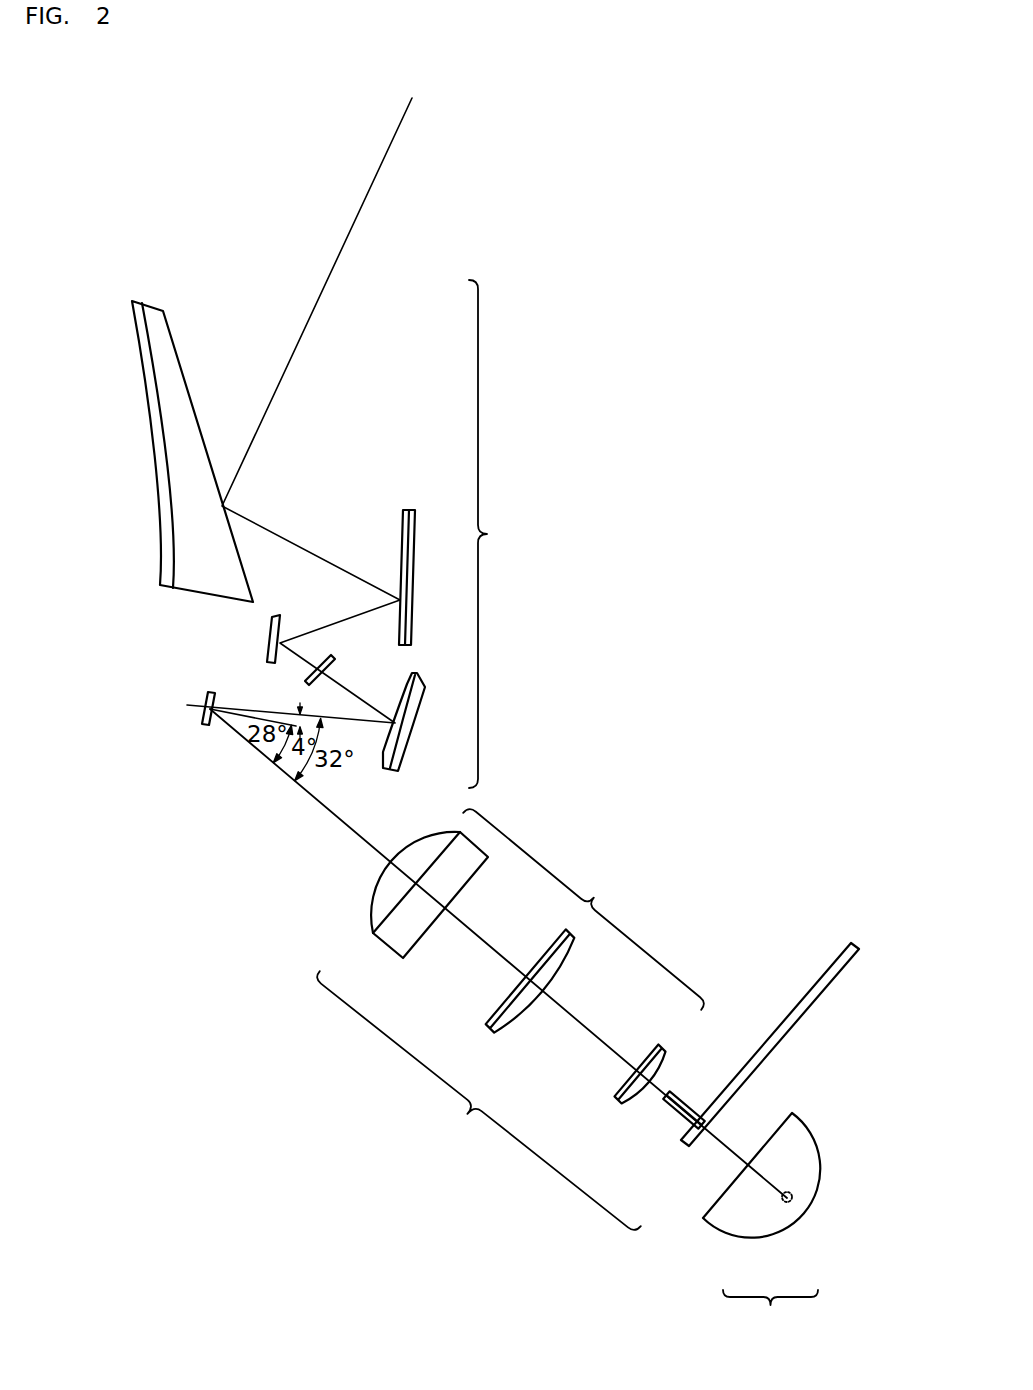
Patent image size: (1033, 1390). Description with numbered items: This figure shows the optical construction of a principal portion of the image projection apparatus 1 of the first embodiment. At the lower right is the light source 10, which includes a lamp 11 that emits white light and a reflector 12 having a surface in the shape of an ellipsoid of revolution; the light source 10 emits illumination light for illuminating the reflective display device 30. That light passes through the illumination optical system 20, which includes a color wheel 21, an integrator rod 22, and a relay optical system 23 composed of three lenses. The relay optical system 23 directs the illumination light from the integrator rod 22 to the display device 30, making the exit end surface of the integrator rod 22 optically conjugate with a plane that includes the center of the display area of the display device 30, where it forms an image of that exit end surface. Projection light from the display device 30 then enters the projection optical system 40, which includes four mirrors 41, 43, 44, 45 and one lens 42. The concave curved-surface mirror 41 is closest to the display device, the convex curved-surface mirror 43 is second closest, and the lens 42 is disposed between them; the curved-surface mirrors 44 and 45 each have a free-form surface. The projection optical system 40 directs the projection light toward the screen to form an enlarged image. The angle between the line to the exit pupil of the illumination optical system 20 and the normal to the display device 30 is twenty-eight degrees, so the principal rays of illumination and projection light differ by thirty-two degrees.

The image projection apparatus 1 is at (215, 1155).
The light source 10 is at (761, 1224).
The lamp 11 is at (795, 1210).
The reflector 12 is at (743, 1231).
The illumination optical system 20 is at (511, 1019).
The color wheel 21 is at (790, 1015).
The integrator rod 22 is at (662, 1112).
The relay optical system 23 is at (537, 920).
The reflective display device 30 is at (204, 724).
The projection optical system 40 is at (329, 534).
The curved-surface mirror 41 is at (405, 700).
The lens 42 is at (305, 681).
The curved-surface mirror 43 is at (280, 625).
The curved-surface mirror 44 is at (403, 530).
The curved-surface mirror 45 is at (178, 386).